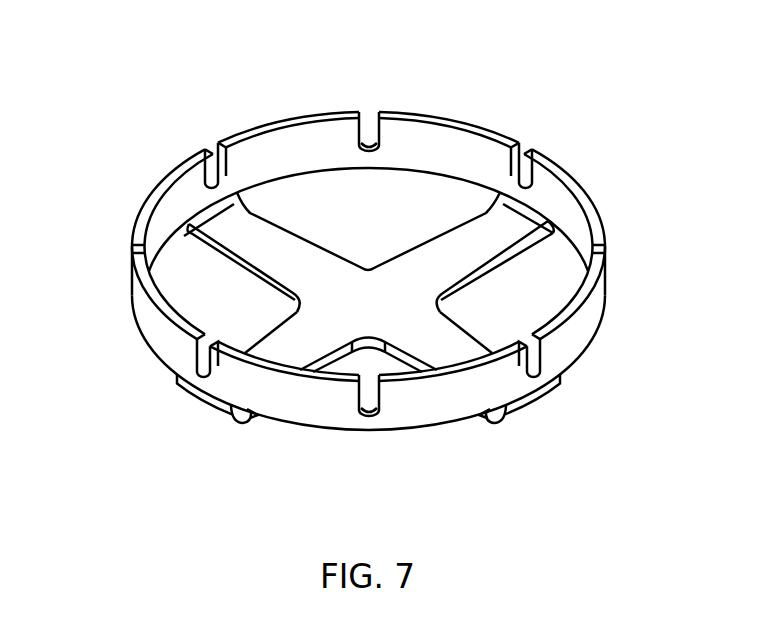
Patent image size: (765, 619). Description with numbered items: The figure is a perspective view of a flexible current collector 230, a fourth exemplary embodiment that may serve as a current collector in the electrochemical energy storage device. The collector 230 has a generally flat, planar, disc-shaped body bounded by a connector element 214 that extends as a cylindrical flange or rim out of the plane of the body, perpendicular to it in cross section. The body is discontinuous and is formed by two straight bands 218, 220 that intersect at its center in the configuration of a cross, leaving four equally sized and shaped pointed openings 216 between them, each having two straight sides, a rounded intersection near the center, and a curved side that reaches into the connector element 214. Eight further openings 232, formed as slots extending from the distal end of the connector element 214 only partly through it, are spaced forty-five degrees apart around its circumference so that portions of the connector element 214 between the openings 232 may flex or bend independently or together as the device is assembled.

The connector element 214 is at (432, 138).
The openings 216 is at (318, 190).
The straight band 218 is at (457, 247).
The straight band 220 is at (274, 247).
The flexible current collector 230 is at (533, 110).
The openings 232 is at (370, 118).